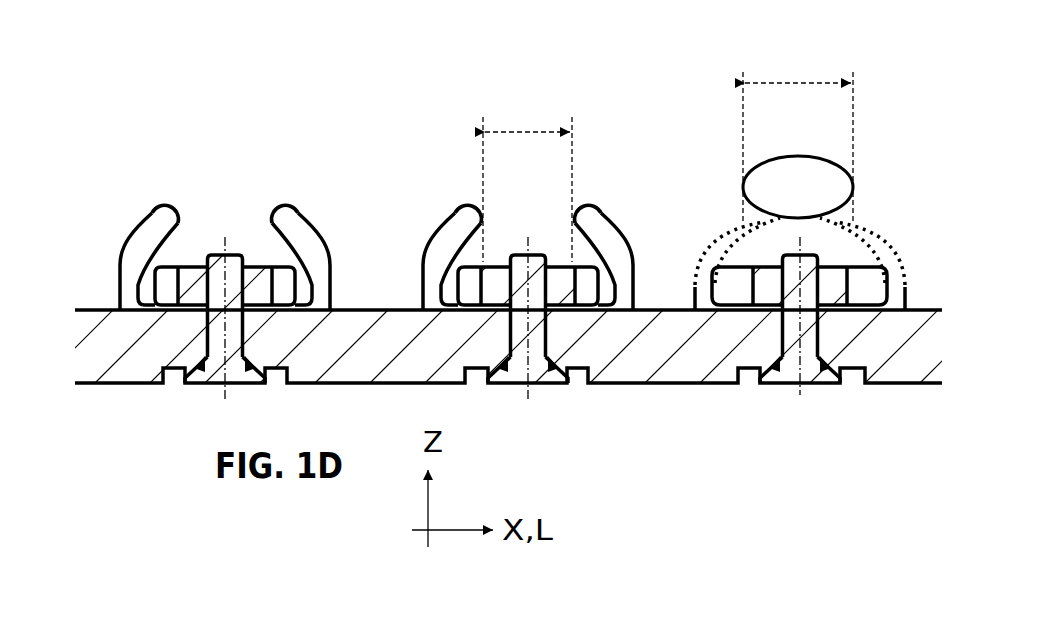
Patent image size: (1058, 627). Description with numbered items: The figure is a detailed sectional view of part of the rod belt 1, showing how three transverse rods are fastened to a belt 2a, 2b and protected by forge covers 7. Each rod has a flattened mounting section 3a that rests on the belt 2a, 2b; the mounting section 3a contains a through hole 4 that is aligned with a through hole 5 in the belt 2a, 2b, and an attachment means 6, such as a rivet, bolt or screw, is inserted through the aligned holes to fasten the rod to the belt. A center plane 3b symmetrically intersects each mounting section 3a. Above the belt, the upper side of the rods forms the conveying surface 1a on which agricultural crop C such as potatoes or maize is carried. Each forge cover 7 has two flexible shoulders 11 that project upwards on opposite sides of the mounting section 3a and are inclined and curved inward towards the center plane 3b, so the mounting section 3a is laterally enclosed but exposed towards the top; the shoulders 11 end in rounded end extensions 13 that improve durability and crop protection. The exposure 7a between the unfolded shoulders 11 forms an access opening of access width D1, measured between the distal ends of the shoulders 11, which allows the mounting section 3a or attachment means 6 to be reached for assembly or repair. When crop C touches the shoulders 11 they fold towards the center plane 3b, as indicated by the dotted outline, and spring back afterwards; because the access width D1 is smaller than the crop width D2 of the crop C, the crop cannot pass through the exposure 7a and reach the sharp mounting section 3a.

The rod belt 1 is at (633, 140).
The conveying surface 1a is at (656, 222).
The belt 2a is at (549, 362).
The belt 2b is at (677, 373).
The mounting section 3a is at (167, 283).
The center plane 3b is at (226, 232).
The through hole 4 is at (505, 290).
The through hole 5 is at (251, 344).
The attachment means 6 is at (217, 372).
The forge cover 7 is at (415, 271).
The exposure 7a is at (207, 193).
The flexible shoulder 11 is at (150, 236).
The rounded end extension 13 is at (167, 213).
The agricultural crop C is at (787, 170).
The access width D1 is at (531, 126).
The crop width D2 is at (800, 80).